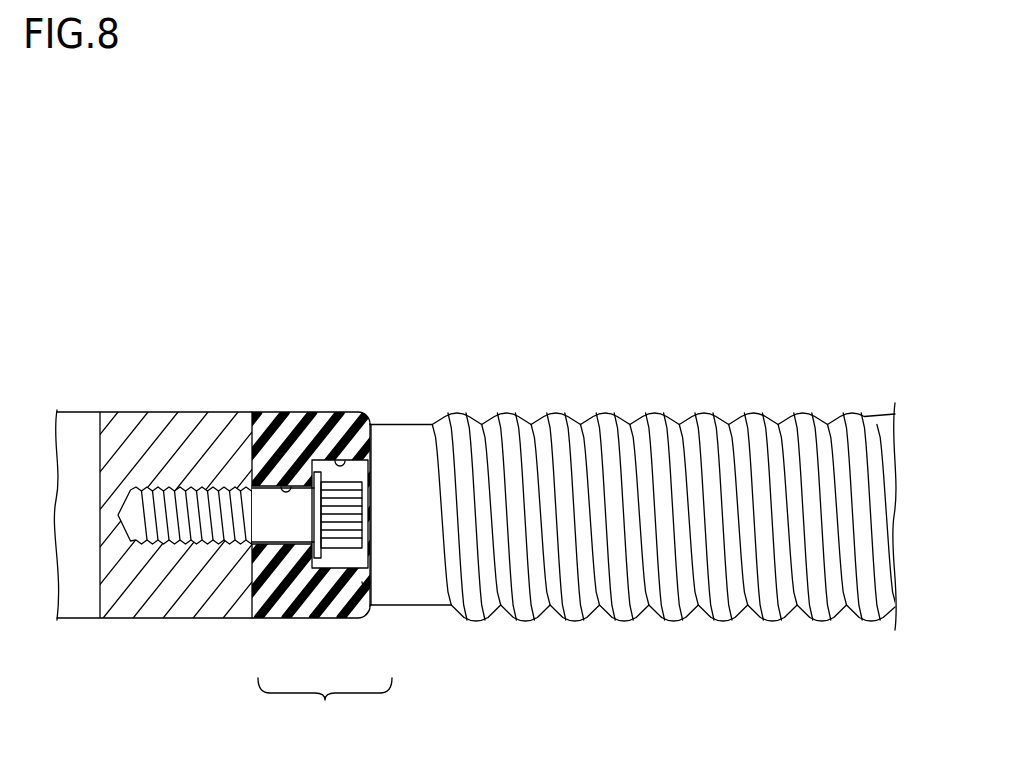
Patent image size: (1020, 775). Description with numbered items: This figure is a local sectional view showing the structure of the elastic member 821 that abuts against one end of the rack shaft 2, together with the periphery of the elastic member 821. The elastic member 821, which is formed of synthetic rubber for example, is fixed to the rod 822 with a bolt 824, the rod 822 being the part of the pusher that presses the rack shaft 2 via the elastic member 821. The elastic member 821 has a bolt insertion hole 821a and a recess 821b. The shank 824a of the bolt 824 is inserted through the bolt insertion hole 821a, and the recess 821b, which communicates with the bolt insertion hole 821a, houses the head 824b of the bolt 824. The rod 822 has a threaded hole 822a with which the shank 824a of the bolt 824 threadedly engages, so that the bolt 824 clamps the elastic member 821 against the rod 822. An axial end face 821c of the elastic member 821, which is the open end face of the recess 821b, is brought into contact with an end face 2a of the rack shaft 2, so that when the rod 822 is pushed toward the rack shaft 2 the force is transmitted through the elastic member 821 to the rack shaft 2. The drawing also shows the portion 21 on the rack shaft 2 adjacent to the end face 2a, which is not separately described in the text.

The rack shaft 2 is at (415, 498).
The end face 2a is at (372, 605).
The corrugation 21 is at (605, 433).
The elastic member 821 is at (362, 412).
The bolt insertion hole 821a is at (283, 488).
The recess 821b is at (340, 462).
The axial end face 821c is at (370, 437).
The rod 822 is at (128, 411).
The threaded hole 822a is at (205, 543).
The bolt 824 is at (322, 601).
The shank 824a is at (265, 528).
The head 824b is at (333, 556).